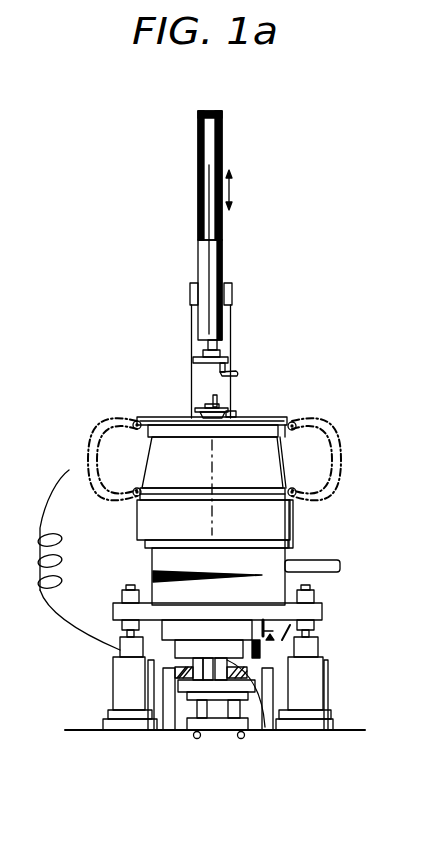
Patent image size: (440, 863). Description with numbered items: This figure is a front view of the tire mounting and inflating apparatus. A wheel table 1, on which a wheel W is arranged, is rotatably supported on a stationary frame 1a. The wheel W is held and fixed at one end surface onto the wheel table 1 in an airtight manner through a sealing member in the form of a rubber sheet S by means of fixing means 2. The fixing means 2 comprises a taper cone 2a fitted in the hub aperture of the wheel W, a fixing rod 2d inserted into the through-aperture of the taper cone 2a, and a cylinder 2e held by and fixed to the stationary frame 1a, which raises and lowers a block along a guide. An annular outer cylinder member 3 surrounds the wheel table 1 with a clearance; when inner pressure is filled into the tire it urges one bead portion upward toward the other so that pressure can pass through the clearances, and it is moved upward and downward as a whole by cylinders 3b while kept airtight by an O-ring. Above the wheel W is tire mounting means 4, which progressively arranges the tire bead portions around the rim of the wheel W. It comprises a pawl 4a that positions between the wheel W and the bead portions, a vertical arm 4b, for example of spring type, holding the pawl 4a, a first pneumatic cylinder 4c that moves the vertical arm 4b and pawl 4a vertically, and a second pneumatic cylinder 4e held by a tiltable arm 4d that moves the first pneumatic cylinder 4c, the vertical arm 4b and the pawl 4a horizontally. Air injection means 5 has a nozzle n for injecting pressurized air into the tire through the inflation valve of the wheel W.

The wheel table 1 is at (287, 478).
The stationary frame 1a is at (258, 714).
The fixing means 2 is at (198, 408).
The taper cone 2a is at (233, 413).
The fixing rod 2d is at (208, 398).
The cylinder 2e is at (210, 710).
The annular outer cylinder member 3 is at (293, 522).
The cylinders 3b is at (120, 684).
The tire mounting means 4 is at (176, 250).
The pawl 4a is at (235, 371).
The vertical arm 4b is at (198, 154).
The first pneumatic cylinder 4c is at (222, 251).
The tiltable arm 4d is at (190, 327).
The second pneumatic cylinder 4e is at (190, 298).
The air injection means 5 is at (38, 564).
The nozzle n is at (71, 474).
The rubber sheet S is at (140, 500).
The wheel W is at (256, 450).